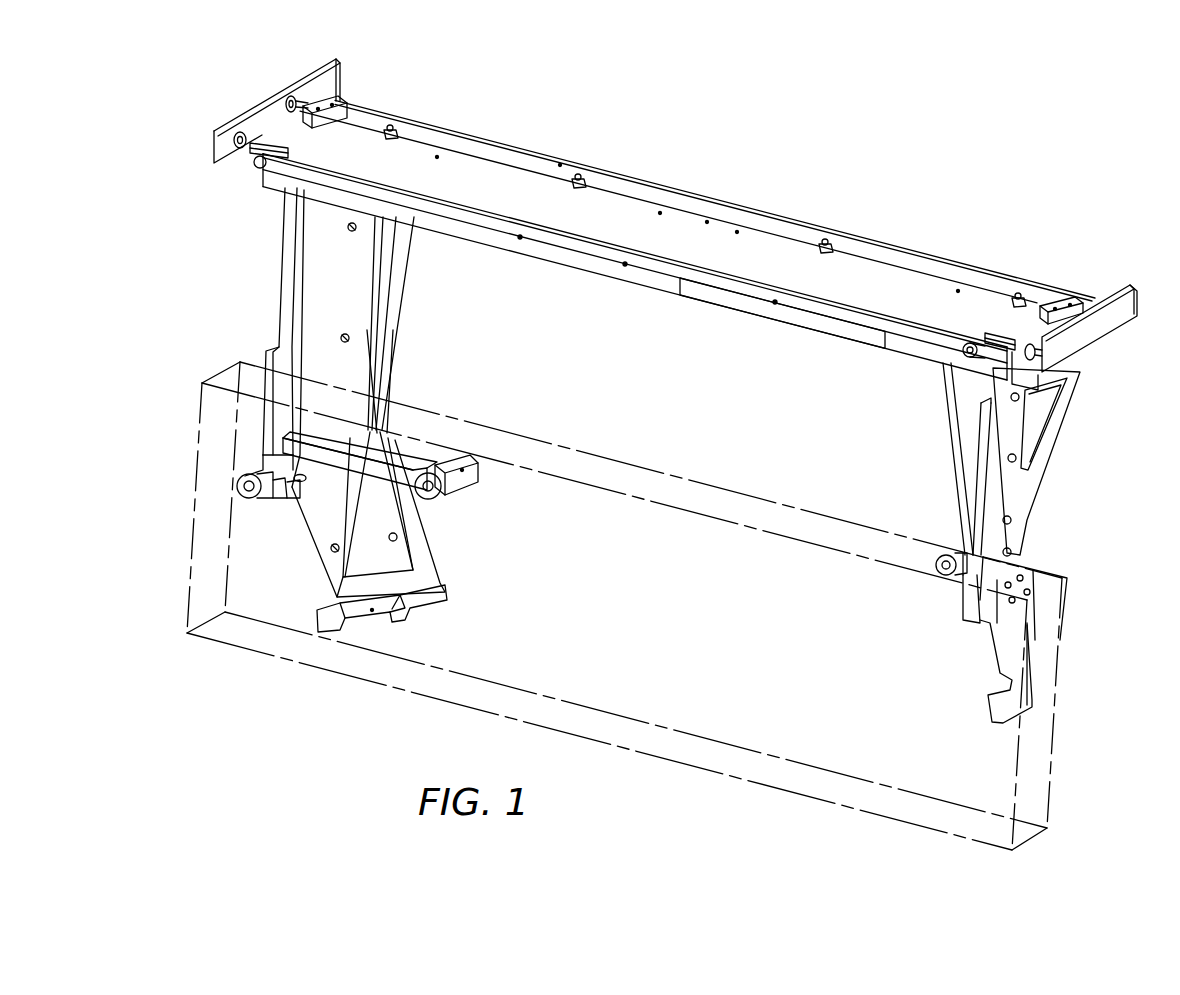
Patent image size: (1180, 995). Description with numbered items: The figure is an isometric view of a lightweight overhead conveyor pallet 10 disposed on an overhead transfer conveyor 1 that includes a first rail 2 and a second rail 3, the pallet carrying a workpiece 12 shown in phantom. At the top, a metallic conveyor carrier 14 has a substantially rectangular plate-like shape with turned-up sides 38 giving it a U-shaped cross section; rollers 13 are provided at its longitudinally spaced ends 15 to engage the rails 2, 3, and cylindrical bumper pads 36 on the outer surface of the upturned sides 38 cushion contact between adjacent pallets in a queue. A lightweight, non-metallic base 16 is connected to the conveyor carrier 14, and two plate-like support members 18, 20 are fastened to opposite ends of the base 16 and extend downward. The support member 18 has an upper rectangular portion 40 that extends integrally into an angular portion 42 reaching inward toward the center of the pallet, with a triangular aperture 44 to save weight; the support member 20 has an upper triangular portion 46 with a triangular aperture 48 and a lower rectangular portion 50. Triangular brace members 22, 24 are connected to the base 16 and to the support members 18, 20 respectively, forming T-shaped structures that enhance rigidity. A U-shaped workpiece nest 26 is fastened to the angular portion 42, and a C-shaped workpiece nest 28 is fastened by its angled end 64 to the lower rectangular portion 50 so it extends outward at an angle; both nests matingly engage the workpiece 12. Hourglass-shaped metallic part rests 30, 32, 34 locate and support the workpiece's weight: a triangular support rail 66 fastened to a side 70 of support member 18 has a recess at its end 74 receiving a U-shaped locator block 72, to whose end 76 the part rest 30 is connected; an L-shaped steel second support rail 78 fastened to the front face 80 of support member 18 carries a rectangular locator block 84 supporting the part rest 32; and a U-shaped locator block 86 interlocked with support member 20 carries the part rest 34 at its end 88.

The overhead transfer conveyor 1 is at (272, 71).
The first rail 2 is at (214, 149).
The second rail 3 is at (1112, 337).
The conveyor pallet 10 is at (876, 183).
The workpiece 12 is at (1057, 693).
The rollers 13 is at (340, 107).
The conveyor carrier 14 is at (761, 247).
The longitudinally spaced ends 15 is at (287, 110).
The base 16 is at (717, 303).
The support member 18 is at (376, 333).
The support member 20 is at (1030, 503).
The brace member 22 is at (412, 268).
The brace member 24 is at (950, 444).
The workpiece nest 26 is at (420, 617).
The workpiece nest 28 is at (986, 708).
The part rest 30 is at (240, 502).
The part rest 32 is at (470, 500).
The part rest 34 is at (940, 552).
The bumper pads 36 is at (962, 334).
The turned-up sides 38 is at (926, 248).
The upper substantially rectangular portion 40 is at (352, 309).
The angular portion 42 is at (332, 524).
The triangular aperture 44 is at (402, 548).
The upper substantially triangular portion 46 is at (1045, 465).
The triangular aperture 48 is at (1050, 403).
The lower substantially rectangular portion 50 is at (1018, 540).
The end 64 is at (1030, 580).
The support rail 66 is at (262, 404).
The side 70 is at (284, 262).
The locator block 72 is at (265, 457).
The end 74 is at (280, 507).
The end 76 is at (275, 495).
The second support rail 78 is at (398, 437).
The front face 80 is at (375, 440).
The locator block 84 is at (450, 470).
The locator block 86 is at (962, 550).
The end 88 is at (965, 590).